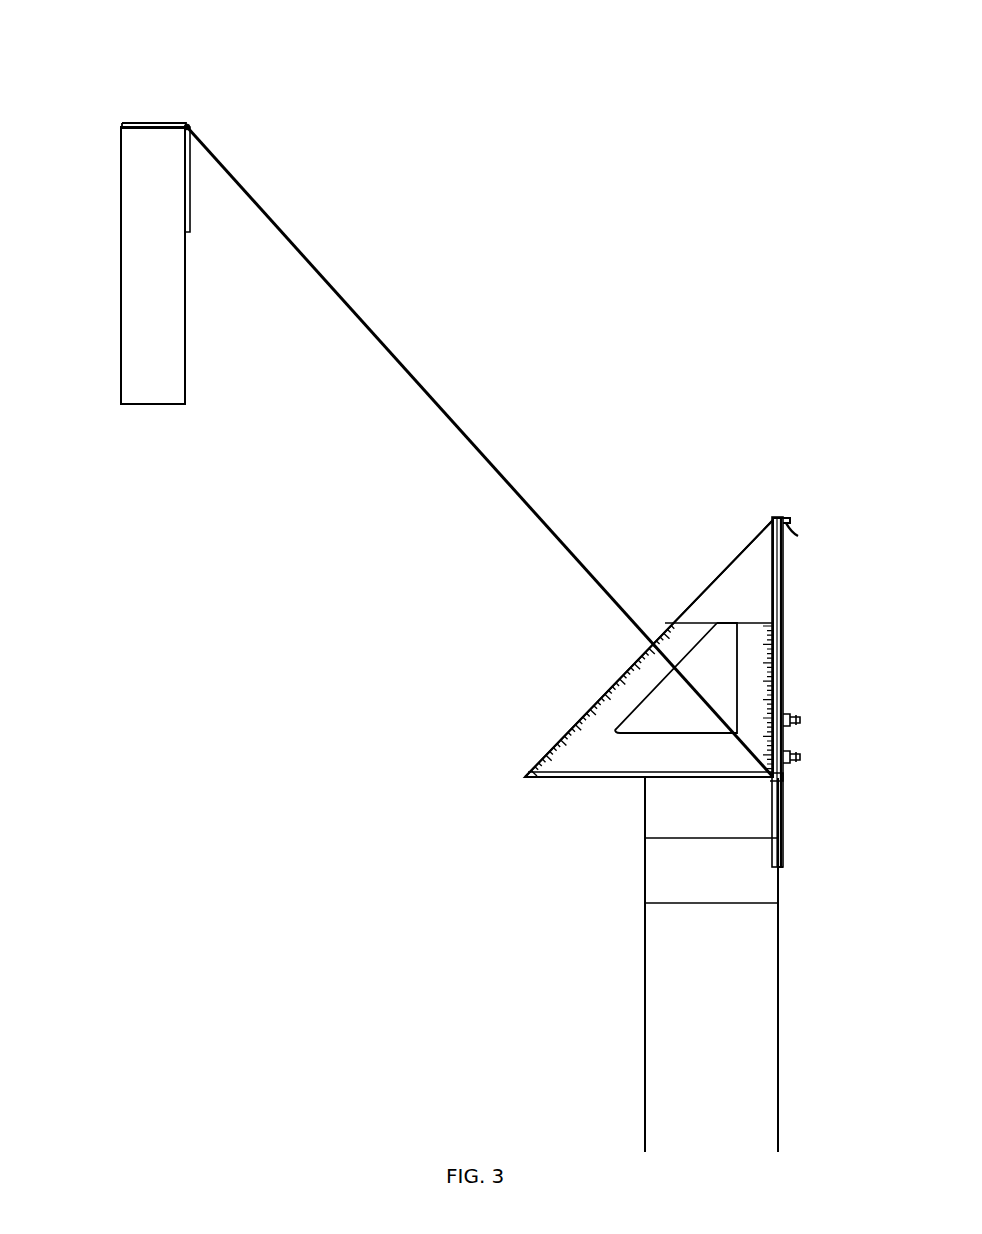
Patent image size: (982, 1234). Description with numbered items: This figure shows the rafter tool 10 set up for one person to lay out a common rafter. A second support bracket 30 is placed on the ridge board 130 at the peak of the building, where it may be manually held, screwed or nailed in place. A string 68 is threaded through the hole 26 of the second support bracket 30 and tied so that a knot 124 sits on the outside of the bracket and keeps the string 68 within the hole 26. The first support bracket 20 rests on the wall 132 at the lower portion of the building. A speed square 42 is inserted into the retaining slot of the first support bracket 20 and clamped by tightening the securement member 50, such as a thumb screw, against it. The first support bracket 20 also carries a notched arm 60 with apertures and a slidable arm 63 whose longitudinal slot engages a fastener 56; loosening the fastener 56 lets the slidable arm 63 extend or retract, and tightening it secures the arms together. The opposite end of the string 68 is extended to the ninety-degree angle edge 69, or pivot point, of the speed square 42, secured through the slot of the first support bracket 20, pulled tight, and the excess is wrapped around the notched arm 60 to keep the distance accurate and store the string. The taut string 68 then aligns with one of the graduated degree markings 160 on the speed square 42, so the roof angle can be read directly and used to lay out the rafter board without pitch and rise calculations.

The rafter tool 10 is at (748, 293).
The first support bracket 20 is at (777, 580).
The hole 26 is at (190, 127).
The second support bracket 30 is at (133, 122).
The speed square 42 is at (627, 700).
The securement member 50 is at (757, 595).
The fastener 56 is at (792, 713).
The notched arm 60 is at (785, 516).
The slidable arm 63 is at (784, 808).
The string 68 is at (384, 334).
The 90° angle edge 69 is at (786, 778).
The knot 124 is at (187, 122).
The ridge board 130 is at (147, 186).
The wall 132 is at (703, 810).
The graduated degree markings 160 is at (650, 657).